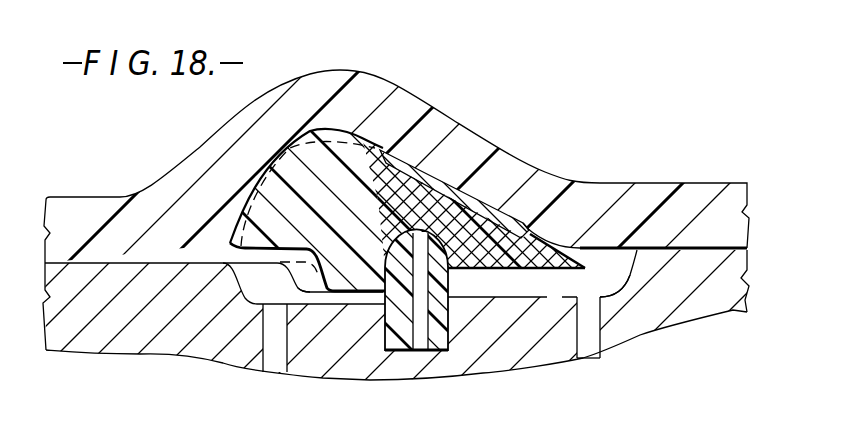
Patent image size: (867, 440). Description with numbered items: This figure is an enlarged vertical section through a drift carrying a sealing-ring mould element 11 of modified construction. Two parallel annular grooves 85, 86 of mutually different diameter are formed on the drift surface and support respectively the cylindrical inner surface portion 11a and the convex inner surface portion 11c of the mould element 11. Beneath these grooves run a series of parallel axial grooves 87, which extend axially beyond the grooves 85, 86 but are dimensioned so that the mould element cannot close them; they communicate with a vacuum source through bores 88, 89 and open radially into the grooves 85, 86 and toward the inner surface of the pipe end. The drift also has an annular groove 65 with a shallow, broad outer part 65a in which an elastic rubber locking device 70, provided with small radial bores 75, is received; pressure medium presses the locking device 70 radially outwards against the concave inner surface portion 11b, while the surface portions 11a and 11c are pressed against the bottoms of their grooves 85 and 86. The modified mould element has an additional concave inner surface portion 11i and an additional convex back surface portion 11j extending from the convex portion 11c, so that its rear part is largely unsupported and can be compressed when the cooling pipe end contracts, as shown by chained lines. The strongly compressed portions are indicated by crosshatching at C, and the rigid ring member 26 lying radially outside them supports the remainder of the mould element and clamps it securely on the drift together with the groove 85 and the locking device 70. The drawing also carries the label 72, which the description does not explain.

The sealing body 11 is at (327, 185).
The hump portion of body 11a is at (309, 135).
The insert portion 11b is at (395, 225).
The foot portion 11c is at (342, 293).
The lip portion 11i is at (262, 325).
The side portion 11j is at (238, 246).
The plate 26 is at (423, 170).
The base member 65 is at (445, 352).
The cover portion of base 65a is at (540, 285).
The slot 70 is at (447, 283).
The cover sheet 72 is at (110, 263).
The retaining pillar 75 is at (408, 330).
The surface 85 is at (605, 266).
The gap 86 is at (310, 282).
The channel 87 is at (562, 297).
The channel 88 is at (272, 365).
The channel wall 89 is at (592, 330).
The clearance C is at (478, 190).